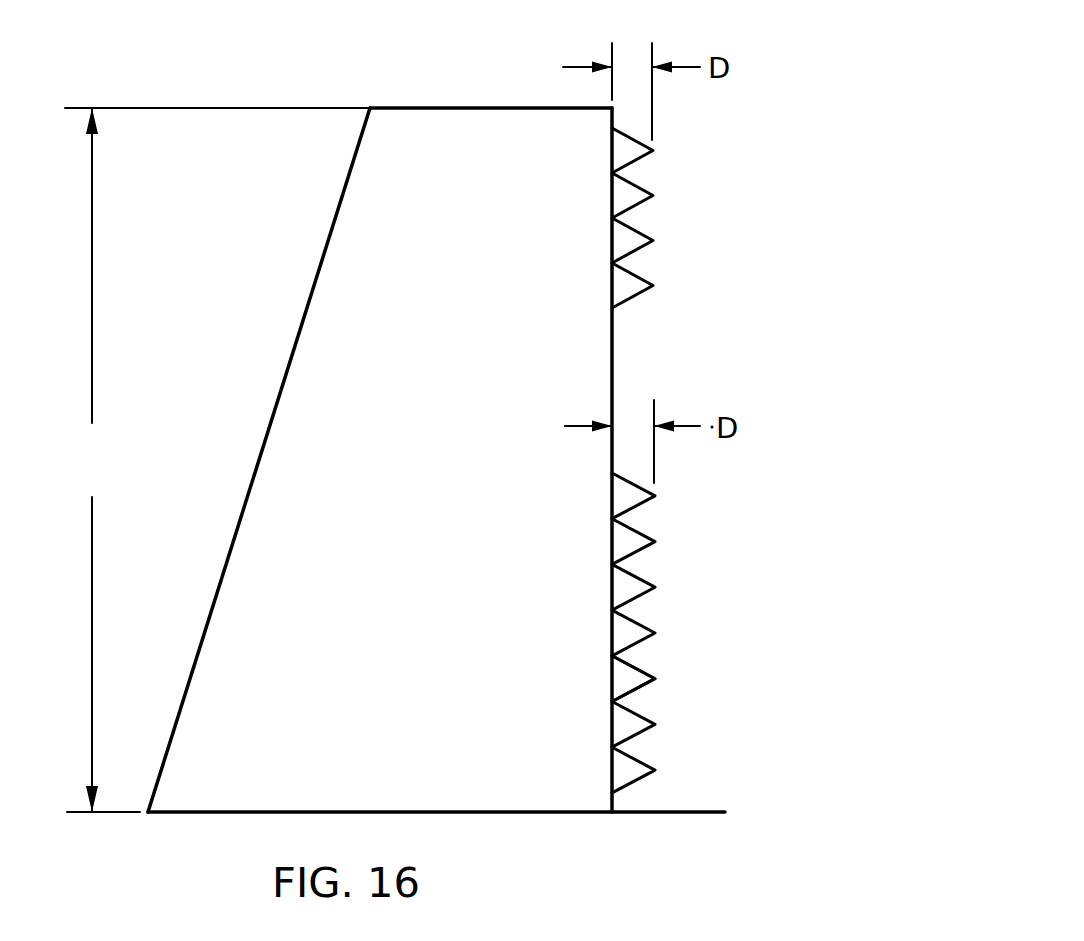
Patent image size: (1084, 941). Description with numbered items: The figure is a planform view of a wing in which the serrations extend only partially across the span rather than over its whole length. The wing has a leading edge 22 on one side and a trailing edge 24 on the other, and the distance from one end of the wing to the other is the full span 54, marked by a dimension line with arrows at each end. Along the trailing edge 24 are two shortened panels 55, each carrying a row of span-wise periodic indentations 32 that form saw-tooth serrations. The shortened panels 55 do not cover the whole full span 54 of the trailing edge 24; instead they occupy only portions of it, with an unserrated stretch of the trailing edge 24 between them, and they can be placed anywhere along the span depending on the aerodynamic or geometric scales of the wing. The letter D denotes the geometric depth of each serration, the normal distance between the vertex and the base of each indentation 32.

The leading edge 22 is at (275, 411).
The trailing edge 24 is at (615, 360).
The periodic indentations 32 is at (648, 680).
The full span 54 is at (110, 479).
The shortened panels 55 is at (665, 230).